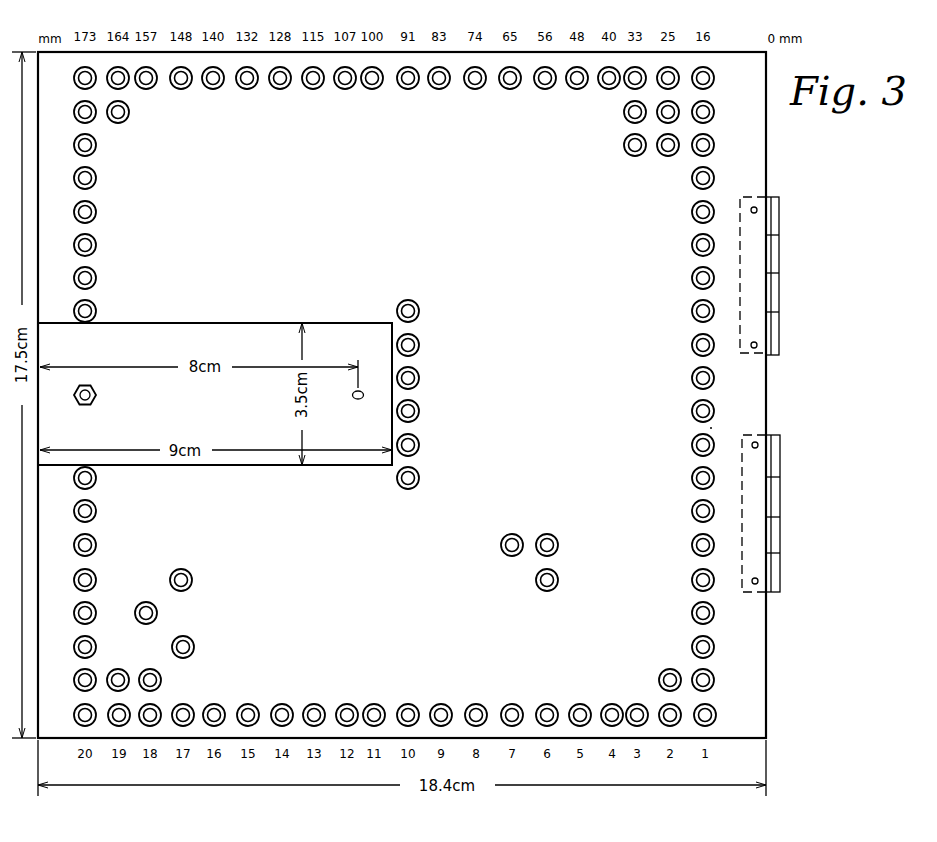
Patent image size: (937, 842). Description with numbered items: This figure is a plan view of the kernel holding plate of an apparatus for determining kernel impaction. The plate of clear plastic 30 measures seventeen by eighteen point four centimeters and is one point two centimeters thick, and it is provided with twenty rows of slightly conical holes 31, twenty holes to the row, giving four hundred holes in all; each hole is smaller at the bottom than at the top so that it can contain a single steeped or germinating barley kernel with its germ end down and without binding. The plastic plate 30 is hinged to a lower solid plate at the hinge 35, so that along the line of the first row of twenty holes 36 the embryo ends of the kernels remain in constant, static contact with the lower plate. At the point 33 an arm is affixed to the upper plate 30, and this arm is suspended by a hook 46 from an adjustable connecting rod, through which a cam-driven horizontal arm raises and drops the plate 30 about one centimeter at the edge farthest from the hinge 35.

The plate of clear plastic 30 is at (768, 620).
The slightly conical holes 31 is at (714, 408).
The point 33 is at (82, 405).
The hinge 35 is at (780, 273).
The first row of twenty holes 36 is at (710, 428).
The hook 46 is at (357, 403).